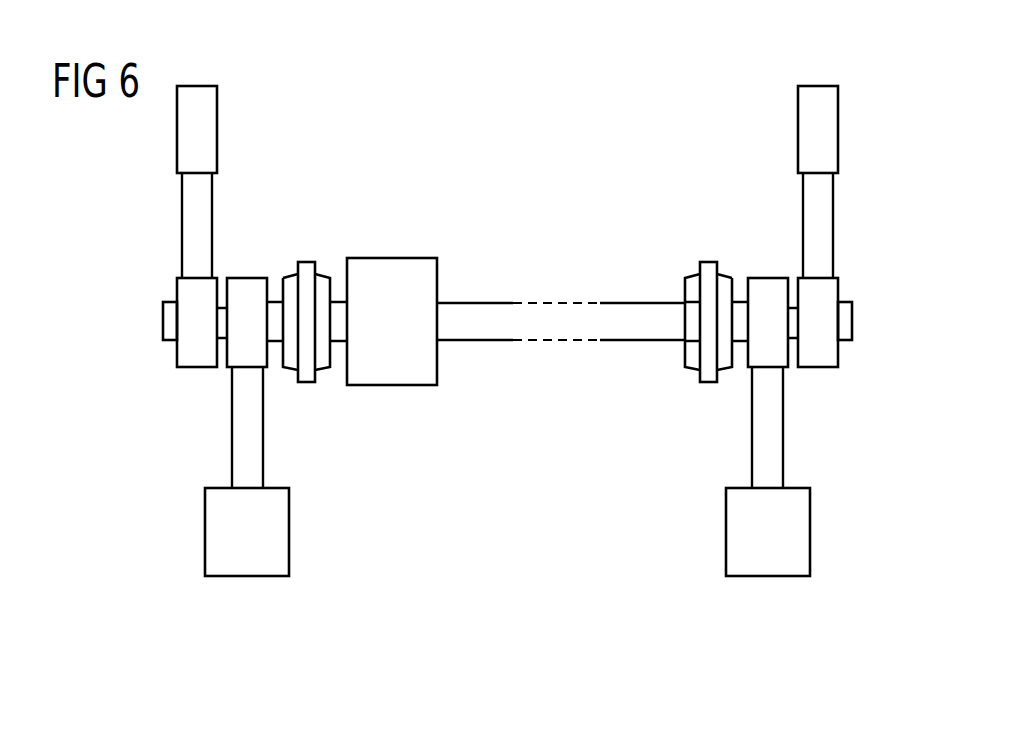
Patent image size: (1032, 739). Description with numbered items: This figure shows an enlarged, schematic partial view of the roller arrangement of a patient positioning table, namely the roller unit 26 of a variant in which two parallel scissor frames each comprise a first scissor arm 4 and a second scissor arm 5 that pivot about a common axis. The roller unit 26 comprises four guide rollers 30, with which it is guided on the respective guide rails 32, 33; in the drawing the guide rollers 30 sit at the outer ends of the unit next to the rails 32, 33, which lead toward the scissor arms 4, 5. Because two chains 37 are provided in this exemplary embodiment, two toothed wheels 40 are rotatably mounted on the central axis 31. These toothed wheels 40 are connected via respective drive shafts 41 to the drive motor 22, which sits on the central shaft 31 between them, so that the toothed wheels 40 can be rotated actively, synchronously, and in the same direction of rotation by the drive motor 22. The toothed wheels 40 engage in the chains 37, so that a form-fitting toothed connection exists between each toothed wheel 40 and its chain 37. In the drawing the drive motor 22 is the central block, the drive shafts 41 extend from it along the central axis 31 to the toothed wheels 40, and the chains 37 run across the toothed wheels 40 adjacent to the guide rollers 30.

The first scissor arm 4 is at (205, 131).
The second scissor arm 5 is at (267, 535).
The drive motor 22 is at (400, 269).
The roller unit 26 is at (485, 463).
The guide rollers 30 is at (247, 290).
The central axis 31 is at (741, 348).
The guide rail 32 is at (195, 230).
The guide rail 33 is at (231, 446).
The chains 37 is at (305, 270).
The toothed wheels 40 is at (322, 370).
The drive shafts 41 is at (340, 352).